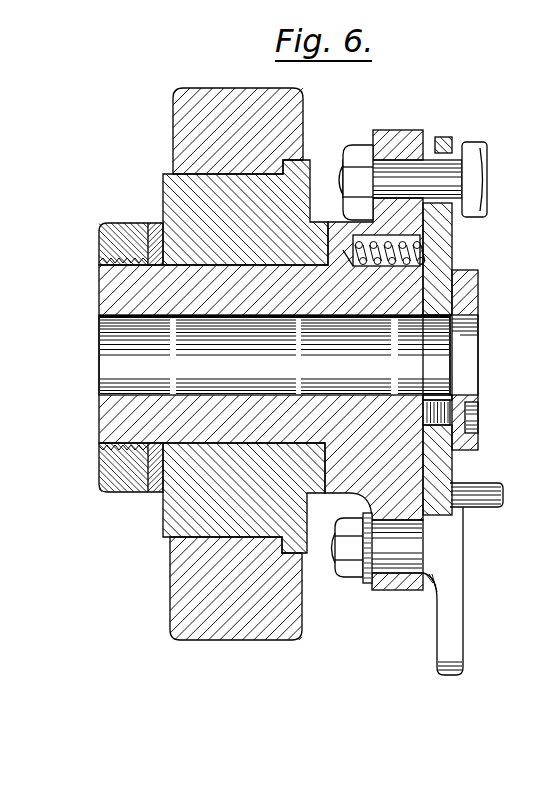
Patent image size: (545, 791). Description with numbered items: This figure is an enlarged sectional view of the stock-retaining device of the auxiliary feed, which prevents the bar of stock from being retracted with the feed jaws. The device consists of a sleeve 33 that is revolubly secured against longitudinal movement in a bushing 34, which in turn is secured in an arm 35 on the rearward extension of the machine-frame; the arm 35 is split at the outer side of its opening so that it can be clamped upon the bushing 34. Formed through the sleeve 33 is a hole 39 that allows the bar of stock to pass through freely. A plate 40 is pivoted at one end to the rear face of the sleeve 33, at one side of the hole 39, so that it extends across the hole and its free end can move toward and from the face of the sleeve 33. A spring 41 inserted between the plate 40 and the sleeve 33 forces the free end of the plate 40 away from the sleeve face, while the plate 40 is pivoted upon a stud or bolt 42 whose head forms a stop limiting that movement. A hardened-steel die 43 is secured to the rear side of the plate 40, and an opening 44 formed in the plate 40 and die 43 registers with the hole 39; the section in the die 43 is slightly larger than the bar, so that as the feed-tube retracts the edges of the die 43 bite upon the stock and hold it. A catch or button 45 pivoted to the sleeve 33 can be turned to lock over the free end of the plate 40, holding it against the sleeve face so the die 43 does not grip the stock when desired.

The sleeve 33 is at (108, 299).
The bushing 34 is at (178, 198).
The arm 35 is at (187, 138).
The hole 39 is at (100, 350).
The plate 40 is at (440, 232).
The spring 41 is at (388, 237).
The stud or bolt 42 is at (476, 182).
The hardened-steel die 43 is at (472, 313).
The opening 44 is at (475, 363).
The catch or button 45 is at (455, 600).